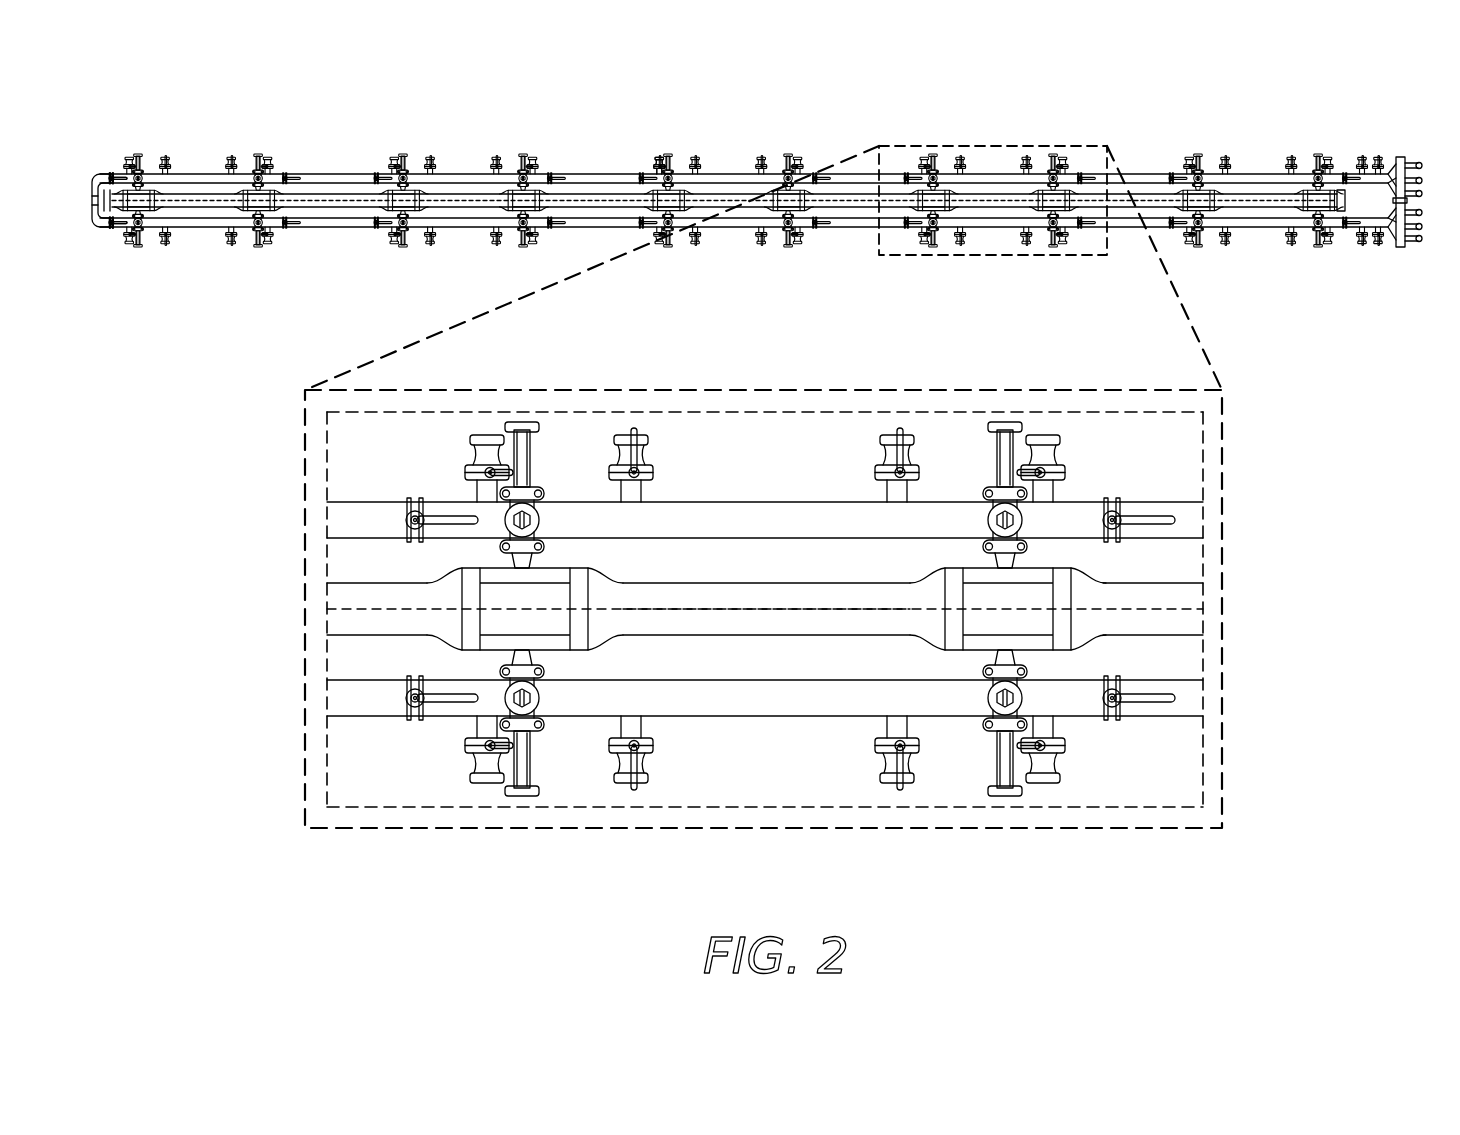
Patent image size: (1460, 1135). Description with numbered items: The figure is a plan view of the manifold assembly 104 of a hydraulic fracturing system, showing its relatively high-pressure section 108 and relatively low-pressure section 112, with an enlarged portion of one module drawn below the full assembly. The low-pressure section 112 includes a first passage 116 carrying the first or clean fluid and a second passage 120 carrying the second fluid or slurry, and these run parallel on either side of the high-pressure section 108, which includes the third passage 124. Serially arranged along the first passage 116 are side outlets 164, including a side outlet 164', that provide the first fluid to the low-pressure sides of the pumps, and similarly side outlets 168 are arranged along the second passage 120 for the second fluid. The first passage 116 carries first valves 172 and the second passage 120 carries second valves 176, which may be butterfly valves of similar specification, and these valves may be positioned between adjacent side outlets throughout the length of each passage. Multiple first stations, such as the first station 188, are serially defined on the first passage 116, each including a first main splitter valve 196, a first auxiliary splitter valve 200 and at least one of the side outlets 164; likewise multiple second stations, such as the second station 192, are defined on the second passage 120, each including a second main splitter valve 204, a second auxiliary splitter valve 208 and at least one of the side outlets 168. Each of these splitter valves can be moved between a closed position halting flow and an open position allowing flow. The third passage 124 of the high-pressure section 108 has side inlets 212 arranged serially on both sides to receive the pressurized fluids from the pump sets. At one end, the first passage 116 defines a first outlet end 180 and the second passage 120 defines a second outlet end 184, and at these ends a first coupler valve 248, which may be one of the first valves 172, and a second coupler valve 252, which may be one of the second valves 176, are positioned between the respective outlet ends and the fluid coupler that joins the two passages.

The manifold assembly 104 is at (1374, 140).
The high-pressure section 108 is at (1213, 642).
The low-pressure section 112 is at (1213, 720).
The first passage 116 is at (1203, 503).
The second passage 120 is at (1290, 248).
The third passage 124 is at (765, 640).
The side outlets 164 is at (754, 292).
The side outlet 164' is at (655, 117).
The side outlets 168 is at (480, 782).
The first valves 172 is at (370, 176).
The second valves 176 is at (370, 226).
The first outlet end 180 is at (95, 172).
The second outlet end 184 is at (104, 230).
The first station 188 is at (327, 472).
The second station 192 is at (327, 746).
The first main splitter valve 196 is at (1165, 516).
The first auxiliary splitter valve 200 is at (455, 528).
The second main splitter valve 204 is at (1160, 704).
The second auxiliary splitter valve 208 is at (455, 704).
The side inlets 212 is at (532, 422).
The first coupler valve 248 is at (115, 172).
The second coupler valve 252 is at (117, 232).